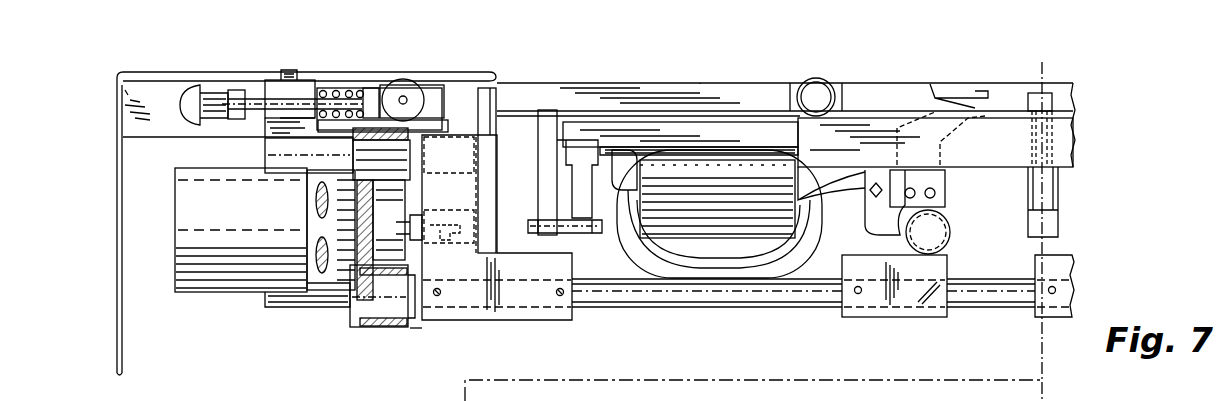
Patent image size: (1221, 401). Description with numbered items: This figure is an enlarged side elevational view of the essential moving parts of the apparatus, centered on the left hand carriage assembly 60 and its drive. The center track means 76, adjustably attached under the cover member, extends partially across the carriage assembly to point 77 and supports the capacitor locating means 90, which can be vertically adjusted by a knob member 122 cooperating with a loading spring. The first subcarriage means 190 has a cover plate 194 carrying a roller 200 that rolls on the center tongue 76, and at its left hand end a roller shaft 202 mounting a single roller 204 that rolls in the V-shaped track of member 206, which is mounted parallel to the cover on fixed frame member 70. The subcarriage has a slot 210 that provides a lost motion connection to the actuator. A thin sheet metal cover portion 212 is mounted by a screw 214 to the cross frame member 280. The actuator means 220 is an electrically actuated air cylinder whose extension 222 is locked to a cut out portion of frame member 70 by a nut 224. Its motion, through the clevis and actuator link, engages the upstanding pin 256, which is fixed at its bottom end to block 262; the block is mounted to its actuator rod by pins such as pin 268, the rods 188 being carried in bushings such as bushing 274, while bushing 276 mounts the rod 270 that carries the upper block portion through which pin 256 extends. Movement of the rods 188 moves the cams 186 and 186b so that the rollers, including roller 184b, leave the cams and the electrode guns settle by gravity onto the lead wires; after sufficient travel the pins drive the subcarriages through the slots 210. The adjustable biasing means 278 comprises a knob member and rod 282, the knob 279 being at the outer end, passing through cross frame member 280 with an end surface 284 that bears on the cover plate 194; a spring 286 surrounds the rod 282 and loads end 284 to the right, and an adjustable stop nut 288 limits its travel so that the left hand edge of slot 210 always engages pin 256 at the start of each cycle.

The left hand carriage assembly 60 is at (440, 328).
The frame member 70 is at (362, 260).
The center track means 76 is at (1066, 138).
The end of center track means 77 is at (792, 125).
The capacitor locating means 90 is at (1053, 92).
The knob member 122 is at (1050, 222).
The roller 184b is at (932, 233).
The cam means 186 is at (1080, 268).
The cam 186b is at (876, 292).
The movable rod 188 is at (745, 285).
The first subcarriage means 190 is at (683, 67).
The cover plate 194 is at (640, 88).
The roller 200 is at (810, 95).
The roller shaft 202 is at (420, 85).
The roller 204 is at (400, 83).
The member with V-shaped track 206 is at (432, 128).
The slot 210 is at (498, 95).
The sheet metal cover portion 212 is at (181, 72).
The screw 214 is at (283, 70).
The actuator means 220 is at (243, 297).
The extension 222 is at (350, 222).
The nut 224 is at (379, 296).
The upstanding pin 256 is at (482, 122).
The block 262 is at (530, 310).
The pin 268 is at (563, 295).
The rod 270 is at (290, 165).
The bushing 274 is at (395, 300).
The bushing 276 is at (390, 150).
The adjustable biasing means 278 is at (222, 126).
The knob 279 is at (182, 98).
The cross frame member 280 is at (306, 80).
The knob member and rod 282 is at (285, 108).
The end surface 284 is at (367, 88).
The spring 286 is at (335, 88).
The adjustable stop nut 288 is at (237, 95).